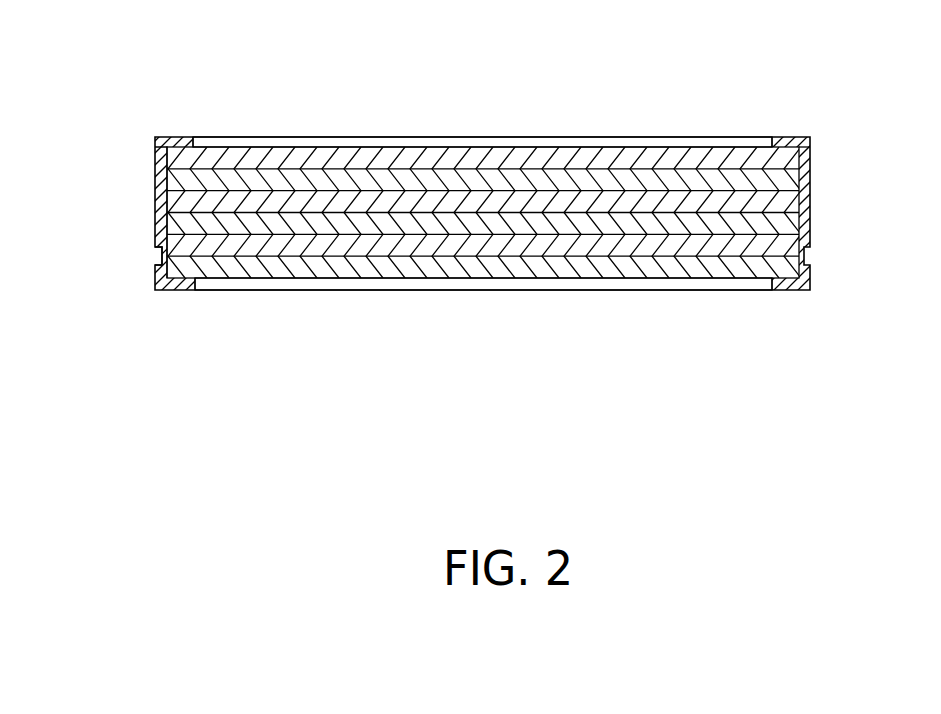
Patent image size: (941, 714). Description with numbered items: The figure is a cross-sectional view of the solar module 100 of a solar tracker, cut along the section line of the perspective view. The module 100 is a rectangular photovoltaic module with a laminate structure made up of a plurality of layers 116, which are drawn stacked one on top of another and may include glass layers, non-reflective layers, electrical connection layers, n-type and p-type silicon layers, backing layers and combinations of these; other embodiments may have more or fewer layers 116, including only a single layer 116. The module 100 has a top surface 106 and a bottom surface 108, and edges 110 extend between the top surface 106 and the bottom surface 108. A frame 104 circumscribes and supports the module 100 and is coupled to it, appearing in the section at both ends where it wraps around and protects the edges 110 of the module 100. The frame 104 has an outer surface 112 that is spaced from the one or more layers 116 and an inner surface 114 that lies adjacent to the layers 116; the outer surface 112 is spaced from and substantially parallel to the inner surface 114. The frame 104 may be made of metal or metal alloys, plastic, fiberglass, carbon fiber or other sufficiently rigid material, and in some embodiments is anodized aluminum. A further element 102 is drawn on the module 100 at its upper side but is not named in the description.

The solar module 100 is at (203, 82).
The top plate 102 is at (407, 137).
The frame 104 is at (168, 137).
The top surface 106 is at (525, 148).
The bottom surface 108 is at (494, 280).
The edges 110 is at (165, 222).
The outer surface 112 is at (154, 277).
The inner surface 114 is at (167, 264).
The layers 116 is at (785, 178).